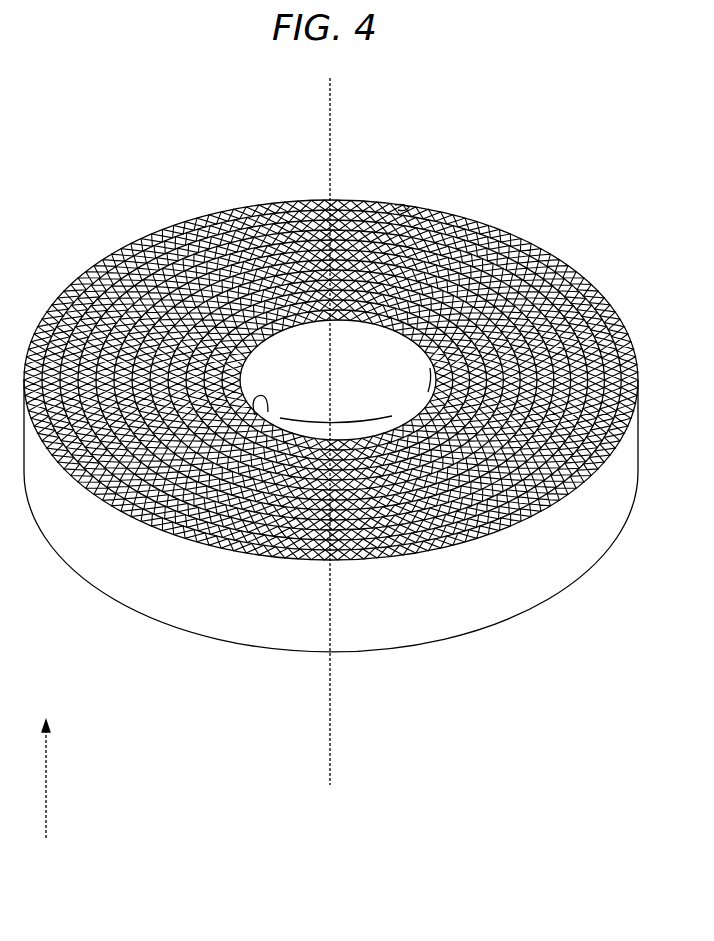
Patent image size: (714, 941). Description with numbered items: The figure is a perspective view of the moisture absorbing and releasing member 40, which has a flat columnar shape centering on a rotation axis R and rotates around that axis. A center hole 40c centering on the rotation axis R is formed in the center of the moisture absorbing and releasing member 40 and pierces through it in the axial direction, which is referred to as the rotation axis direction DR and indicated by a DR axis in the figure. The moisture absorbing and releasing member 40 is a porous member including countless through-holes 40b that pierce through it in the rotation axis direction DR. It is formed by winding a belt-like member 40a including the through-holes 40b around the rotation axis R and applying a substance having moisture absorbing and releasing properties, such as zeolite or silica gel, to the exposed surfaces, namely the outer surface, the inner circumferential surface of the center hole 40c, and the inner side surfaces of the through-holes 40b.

The moisture absorbing and releasing member 40 is at (497, 163).
The belt-like member 40a is at (404, 204).
The through-holes 40b is at (128, 268).
The center hole 40c is at (205, 548).
The rotation axis R is at (332, 90).
The rotation axis direction DR is at (51, 764).